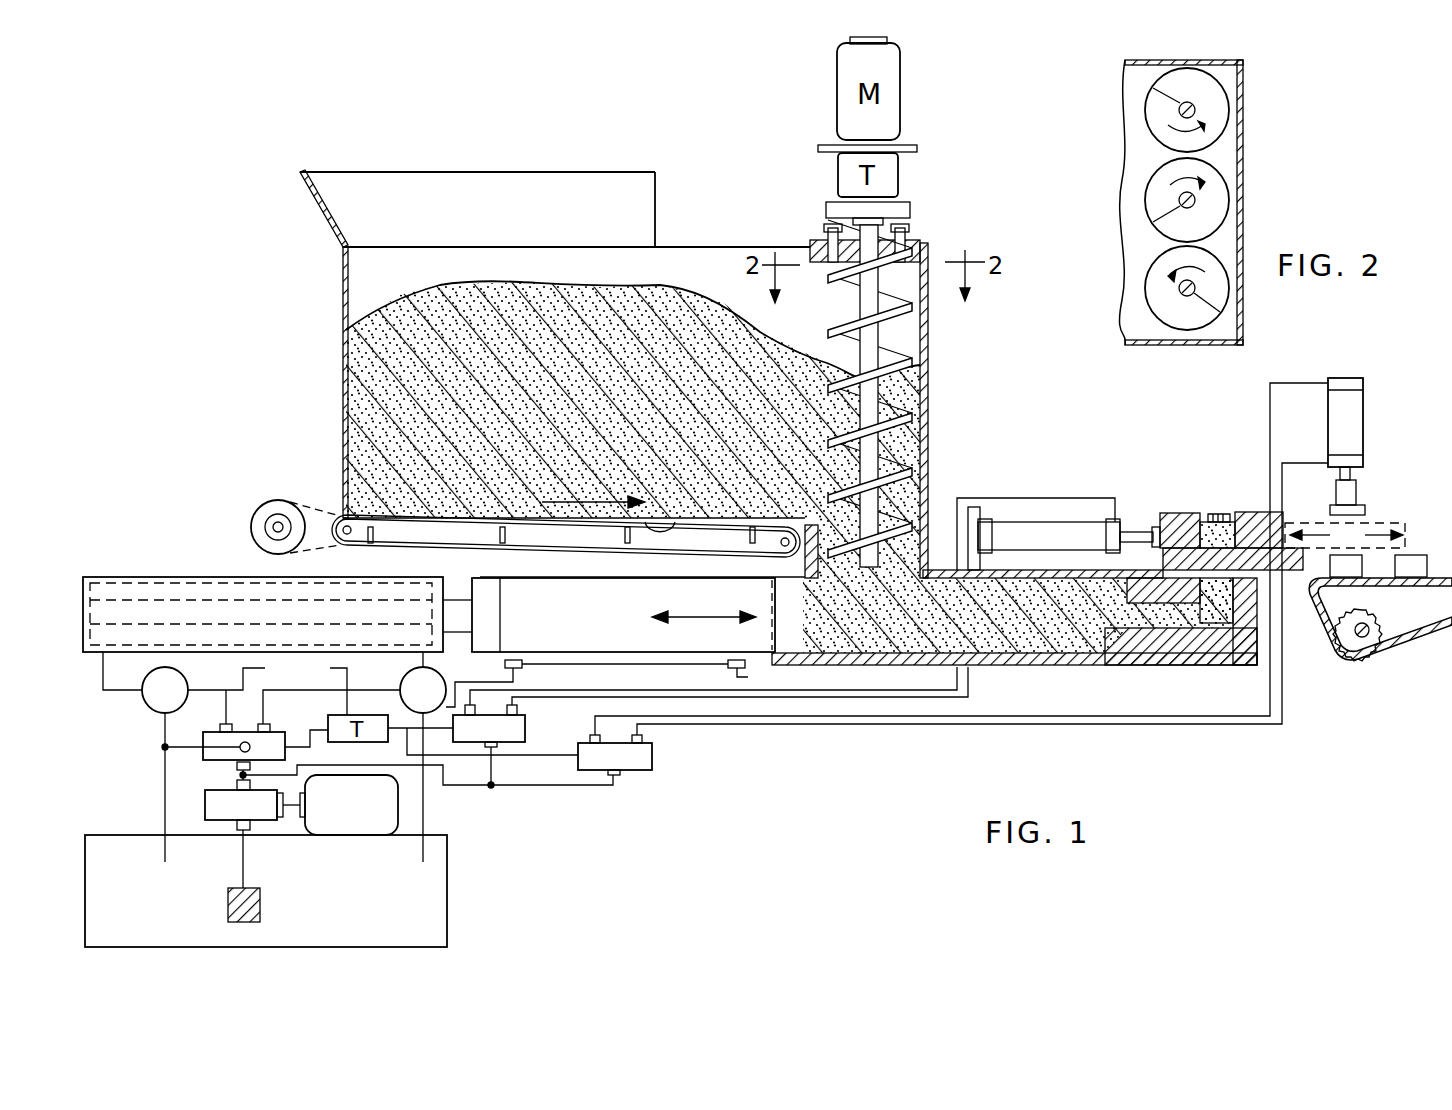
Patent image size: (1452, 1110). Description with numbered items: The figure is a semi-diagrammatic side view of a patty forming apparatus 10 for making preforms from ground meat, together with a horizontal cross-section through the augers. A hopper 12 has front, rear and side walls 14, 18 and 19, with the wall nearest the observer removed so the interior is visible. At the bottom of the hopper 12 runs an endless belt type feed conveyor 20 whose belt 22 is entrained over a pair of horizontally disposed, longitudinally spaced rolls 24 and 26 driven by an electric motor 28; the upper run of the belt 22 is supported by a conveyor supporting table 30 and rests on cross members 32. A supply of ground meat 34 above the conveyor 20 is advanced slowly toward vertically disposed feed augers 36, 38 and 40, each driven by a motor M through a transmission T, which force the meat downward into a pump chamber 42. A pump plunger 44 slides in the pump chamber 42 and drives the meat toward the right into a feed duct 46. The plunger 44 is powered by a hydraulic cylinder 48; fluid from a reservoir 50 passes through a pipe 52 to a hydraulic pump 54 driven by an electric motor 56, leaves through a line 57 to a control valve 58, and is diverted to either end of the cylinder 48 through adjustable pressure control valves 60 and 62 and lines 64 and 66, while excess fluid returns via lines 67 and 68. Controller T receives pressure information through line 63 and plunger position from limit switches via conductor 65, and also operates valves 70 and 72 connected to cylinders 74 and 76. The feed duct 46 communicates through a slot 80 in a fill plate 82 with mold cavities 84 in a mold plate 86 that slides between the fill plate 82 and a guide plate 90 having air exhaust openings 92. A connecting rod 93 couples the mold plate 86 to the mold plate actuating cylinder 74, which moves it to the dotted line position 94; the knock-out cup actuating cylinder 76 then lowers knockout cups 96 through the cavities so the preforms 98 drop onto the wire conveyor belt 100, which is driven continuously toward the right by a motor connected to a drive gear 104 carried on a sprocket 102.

In FIG. 1, the patty forming apparatus 10 is at (290, 234).
In FIG. 1, the hopper 12 is at (343, 300).
In FIG. 1, the hopper wall 14 is at (928, 360).
In FIG. 2, the hopper wall 14 is at (1243, 178).
In FIG. 1, the hopper wall 18 is at (676, 262).
In FIG. 2, the hopper wall 18 is at (1148, 60).
In FIG. 2, the hopper wall 19 is at (1152, 345).
In FIG. 1, the feed conveyor 20 is at (342, 514).
In FIG. 1, the belt 22 is at (420, 553).
In FIG. 1, the roll 24 is at (338, 544).
In FIG. 1, the roll 26 is at (782, 534).
In FIG. 1, the electric motor 28 is at (258, 518).
In FIG. 1, the conveyor supporting table 30 is at (665, 527).
In FIG. 1, the cross members 32 is at (430, 525).
In FIG. 1, the ground meat 34 is at (573, 283).
In FIG. 2, the feed auger 36 is at (1145, 114).
In FIG. 2, the feed auger 38 is at (1145, 203).
In FIG. 1, the feed auger 40 is at (878, 340).
In FIG. 2, the feed auger 40 is at (1145, 290).
In FIG. 1, the pump chamber 42 is at (1000, 640).
In FIG. 1, the pump plunger 44 is at (606, 631).
In FIG. 1, the feed duct 46 is at (1180, 630).
In FIG. 1, the hydraulic cylinder 48 is at (138, 577).
In FIG. 1, the reservoir 50 is at (140, 842).
In FIG. 1, the pipe 52 is at (247, 863).
In FIG. 1, the hydraulic pump 54 is at (256, 818).
In FIG. 1, the electric motor 56 is at (367, 816).
In FIG. 1, the line 57 is at (240, 775).
In FIG. 1, the control valve 58 is at (272, 733).
In FIG. 1, the pressure control valve 60 is at (183, 680).
In FIG. 1, the pressure control valve 62 is at (417, 683).
In FIG. 1, the line 63 is at (328, 668).
In FIG. 1, the line 64 is at (123, 693).
In FIG. 1, the conductor 65 is at (700, 666).
In FIG. 1, the line 66 is at (428, 655).
In FIG. 1, the return line 67 is at (425, 808).
In FIG. 1, the return line 68 is at (162, 793).
In FIG. 1, the valve 70 is at (513, 732).
In FIG. 1, the valve 72 is at (652, 758).
In FIG. 1, the mold plate actuating cylinder 74 is at (1033, 530).
In FIG. 1, the knock-out cup actuating cylinder 76 is at (1357, 427).
In FIG. 1, the slot 80 is at (1272, 575).
In FIG. 1, the fill plate 82 is at (1252, 546).
In FIG. 1, the mold cavities 84 is at (1195, 530).
In FIG. 1, the mold plate 86 is at (1238, 484).
In FIG. 1, the guide plate 90 is at (1285, 556).
In FIG. 1, the air exhaust openings 92 is at (1206, 525).
In FIG. 1, the connecting rod 93 is at (1133, 532).
In FIG. 1, the dotted line position 94 is at (1396, 518).
In FIG. 1, the knockout cups 96 is at (1362, 509).
In FIG. 1, the preforms 98 is at (1352, 565).
In FIG. 1, the conveyor belt 100 is at (1432, 580).
In FIG. 1, the sprocket 102 is at (1370, 640).
In FIG. 1, the drive gear 104 is at (1352, 645).